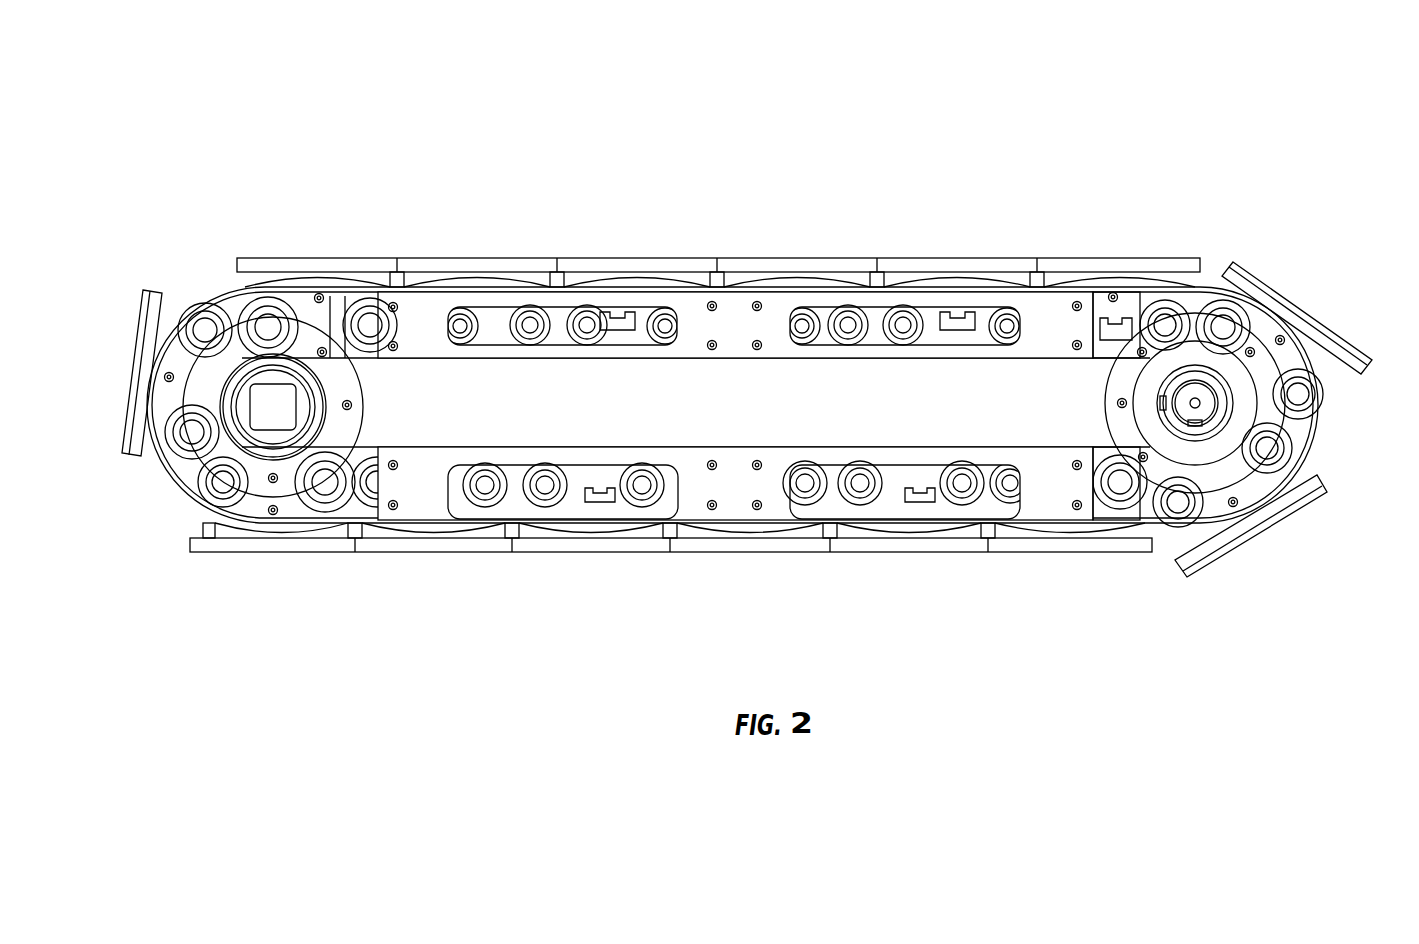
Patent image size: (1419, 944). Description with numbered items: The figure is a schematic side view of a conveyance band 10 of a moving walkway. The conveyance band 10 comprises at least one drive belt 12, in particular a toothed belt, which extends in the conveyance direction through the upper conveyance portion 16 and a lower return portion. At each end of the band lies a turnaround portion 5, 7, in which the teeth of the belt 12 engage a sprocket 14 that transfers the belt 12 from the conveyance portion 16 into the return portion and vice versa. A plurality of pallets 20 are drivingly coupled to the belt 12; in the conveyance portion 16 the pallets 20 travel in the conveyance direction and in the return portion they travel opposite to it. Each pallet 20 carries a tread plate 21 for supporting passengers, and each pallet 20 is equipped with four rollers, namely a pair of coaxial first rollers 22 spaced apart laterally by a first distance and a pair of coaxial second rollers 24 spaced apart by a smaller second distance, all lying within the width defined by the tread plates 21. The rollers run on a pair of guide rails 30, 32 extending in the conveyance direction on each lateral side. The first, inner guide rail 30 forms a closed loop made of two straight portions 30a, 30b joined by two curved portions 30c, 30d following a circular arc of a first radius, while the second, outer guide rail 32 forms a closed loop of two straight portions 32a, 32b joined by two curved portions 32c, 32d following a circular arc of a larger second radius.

The turnaround portion 5 is at (75, 516).
The turnaround portion 7 is at (1314, 529).
The conveyance band 10 is at (1201, 134).
The drive belt 12 is at (1108, 338).
The sprocket 14 is at (369, 431).
The conveyance portion 16 is at (1088, 405).
The pallet 20 is at (131, 272).
The tread plate 21 is at (418, 258).
The first roller 22 is at (268, 300).
The second roller 24 is at (367, 300).
The first guide rail 30 is at (345, 360).
The straight portion 30a is at (724, 358).
The straight portion 30b is at (741, 447).
The curved portion 30c is at (247, 449).
The curved portion 30d is at (1253, 414).
The second guide rail 32 is at (222, 298).
The straight portion 32a is at (341, 297).
The straight portion 32b is at (355, 532).
The curved portion 32c is at (178, 478).
The curved portion 32d is at (1305, 450).